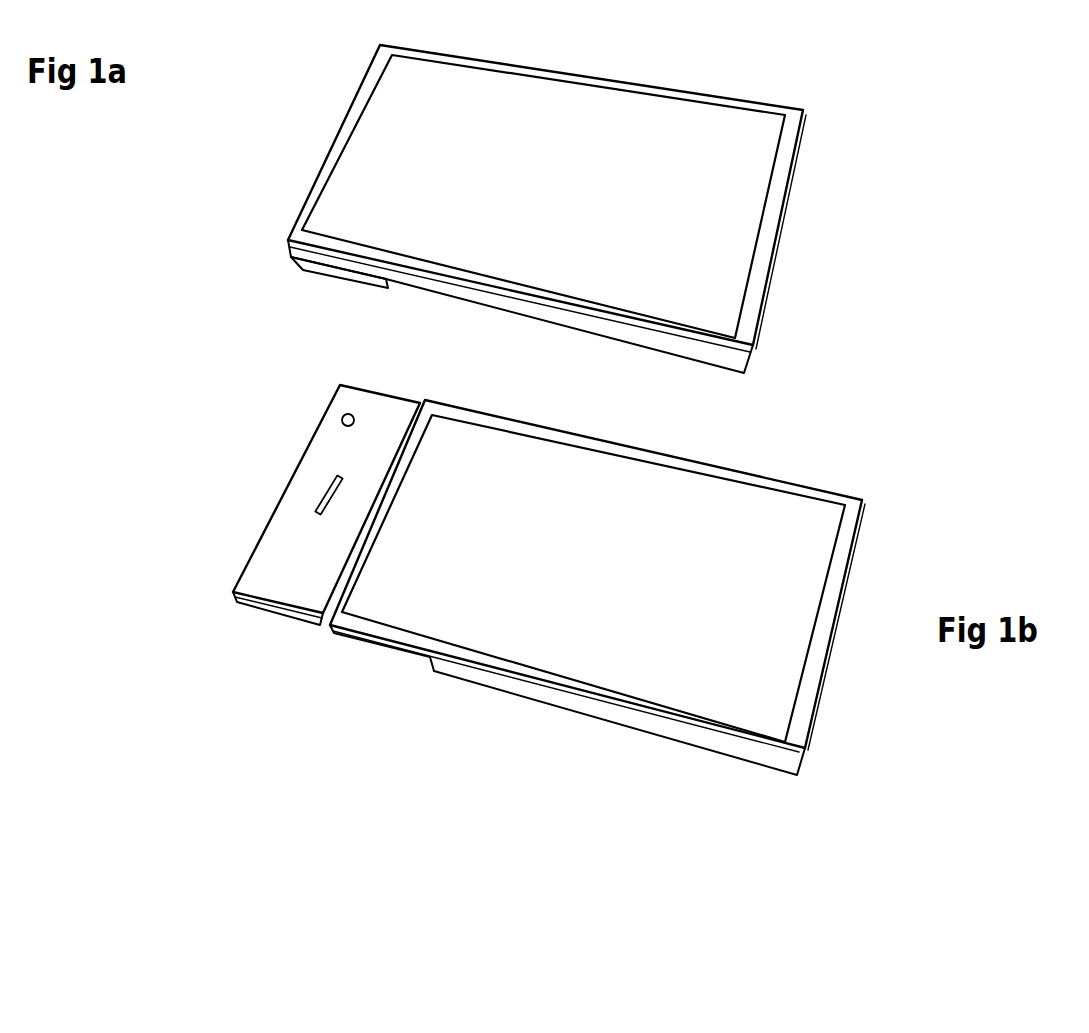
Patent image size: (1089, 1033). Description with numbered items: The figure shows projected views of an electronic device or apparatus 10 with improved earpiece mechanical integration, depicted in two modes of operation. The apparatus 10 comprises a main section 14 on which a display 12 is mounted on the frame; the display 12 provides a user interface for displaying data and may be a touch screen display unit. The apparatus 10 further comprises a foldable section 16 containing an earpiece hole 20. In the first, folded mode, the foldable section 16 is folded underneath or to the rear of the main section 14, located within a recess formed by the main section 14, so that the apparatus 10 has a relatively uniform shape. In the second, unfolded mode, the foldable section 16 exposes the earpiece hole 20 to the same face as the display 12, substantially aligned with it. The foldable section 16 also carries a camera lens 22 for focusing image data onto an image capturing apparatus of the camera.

In FIG. 1A, the electronic device 10 is at (757, 283).
In FIG. 1B, the electronic device 10 is at (862, 500).
In FIG. 1A, the display 12 is at (628, 117).
In FIG. 1B, the display 12 is at (755, 700).
In FIG. 1A, the main section 14 is at (291, 289).
In FIG. 1B, the main section 14 is at (785, 782).
In FIG. 1A, the foldable section 16 is at (378, 292).
In FIG. 1B, the foldable section 16 is at (310, 633).
In FIG. 1B, the earpiece hole 20 is at (332, 488).
In FIG. 1B, the camera lens 22 is at (342, 418).